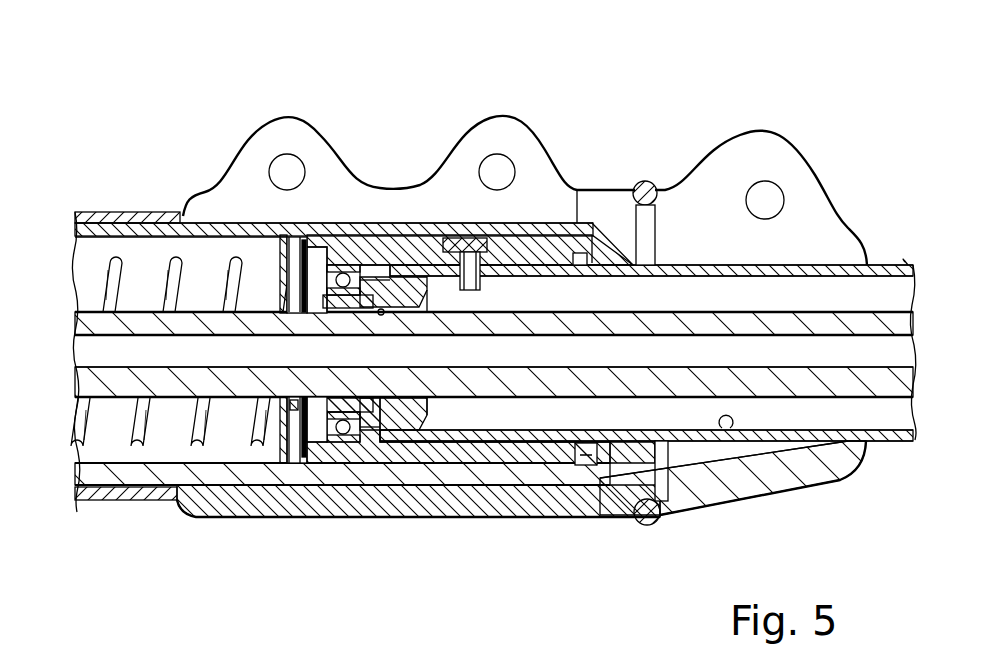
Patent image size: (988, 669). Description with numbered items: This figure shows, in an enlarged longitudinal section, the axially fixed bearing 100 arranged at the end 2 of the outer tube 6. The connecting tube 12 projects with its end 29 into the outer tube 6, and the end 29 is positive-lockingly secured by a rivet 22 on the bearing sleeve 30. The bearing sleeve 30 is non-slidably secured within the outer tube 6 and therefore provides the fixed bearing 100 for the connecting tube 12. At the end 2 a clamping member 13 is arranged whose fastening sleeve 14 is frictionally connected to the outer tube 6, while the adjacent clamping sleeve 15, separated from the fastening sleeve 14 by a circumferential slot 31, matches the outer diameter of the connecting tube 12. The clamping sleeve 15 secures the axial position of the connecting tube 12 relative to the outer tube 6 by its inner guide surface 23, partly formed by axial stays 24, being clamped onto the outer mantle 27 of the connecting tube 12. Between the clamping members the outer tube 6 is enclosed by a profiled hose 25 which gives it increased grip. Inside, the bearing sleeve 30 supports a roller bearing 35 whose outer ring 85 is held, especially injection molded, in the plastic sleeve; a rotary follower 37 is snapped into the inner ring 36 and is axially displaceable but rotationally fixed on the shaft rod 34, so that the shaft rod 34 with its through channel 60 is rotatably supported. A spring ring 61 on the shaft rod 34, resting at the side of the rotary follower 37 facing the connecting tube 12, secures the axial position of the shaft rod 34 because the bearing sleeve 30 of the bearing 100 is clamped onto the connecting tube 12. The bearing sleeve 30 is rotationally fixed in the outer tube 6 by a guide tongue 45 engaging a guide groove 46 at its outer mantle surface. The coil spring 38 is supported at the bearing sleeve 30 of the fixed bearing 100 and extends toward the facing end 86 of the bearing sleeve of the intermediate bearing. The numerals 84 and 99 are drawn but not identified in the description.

The end of the outer tube 2 is at (497, 304).
The outer tube 6 is at (145, 230).
The connecting tube 12 is at (818, 270).
The clamping member 13 is at (249, 126).
The fastening sleeve 14 is at (487, 480).
The clamping sleeve 15 is at (790, 478).
The rivet 22 is at (412, 265).
The guide surface 23 is at (688, 463).
The axial stays 24 is at (722, 428).
The profiled hose 25 is at (108, 218).
The outer mantle 27 is at (905, 262).
The end of the connecting tube 29 is at (430, 462).
The bearing sleeve 30 is at (376, 264).
The circumferential slot 31 is at (648, 235).
The shaft rod 34 is at (843, 383).
The roller bearing 35 is at (345, 262).
The inner ring 36 is at (332, 445).
The rotary follower 37 is at (400, 440).
The coil spring 38 is at (223, 282).
The guide tongue 45 is at (110, 458).
The guide groove 46 is at (520, 447).
The through channel 60 is at (858, 353).
The spring ring 61 is at (384, 314).
The clamp ring 84 is at (279, 450).
The outer ring 85 is at (352, 445).
The end of the bearing sleeve 86 is at (590, 466).
The pin 99 is at (651, 526).
The axially fixed bearing 100 is at (560, 211).